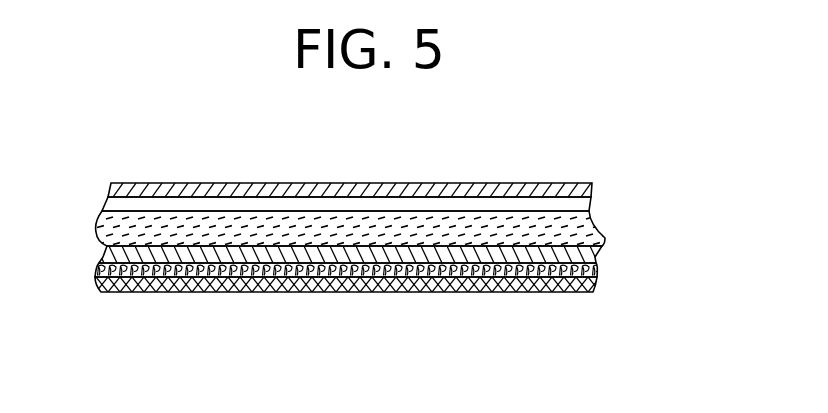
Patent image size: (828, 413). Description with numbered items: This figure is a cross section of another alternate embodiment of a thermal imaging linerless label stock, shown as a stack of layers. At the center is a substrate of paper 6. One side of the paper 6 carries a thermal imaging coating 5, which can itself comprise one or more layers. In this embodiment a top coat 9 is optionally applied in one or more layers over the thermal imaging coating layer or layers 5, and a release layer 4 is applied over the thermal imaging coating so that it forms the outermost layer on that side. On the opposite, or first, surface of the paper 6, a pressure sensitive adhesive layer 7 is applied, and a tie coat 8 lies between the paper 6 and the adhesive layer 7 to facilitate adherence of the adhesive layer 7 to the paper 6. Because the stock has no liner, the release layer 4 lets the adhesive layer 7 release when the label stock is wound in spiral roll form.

The release layer 4 is at (577, 288).
The thermal imaging coating 5 is at (598, 255).
The paper 6 is at (605, 228).
The pressure sensitive adhesive layer 7 is at (543, 195).
The tie coat 8 is at (590, 205).
The top coat 9 is at (597, 273).